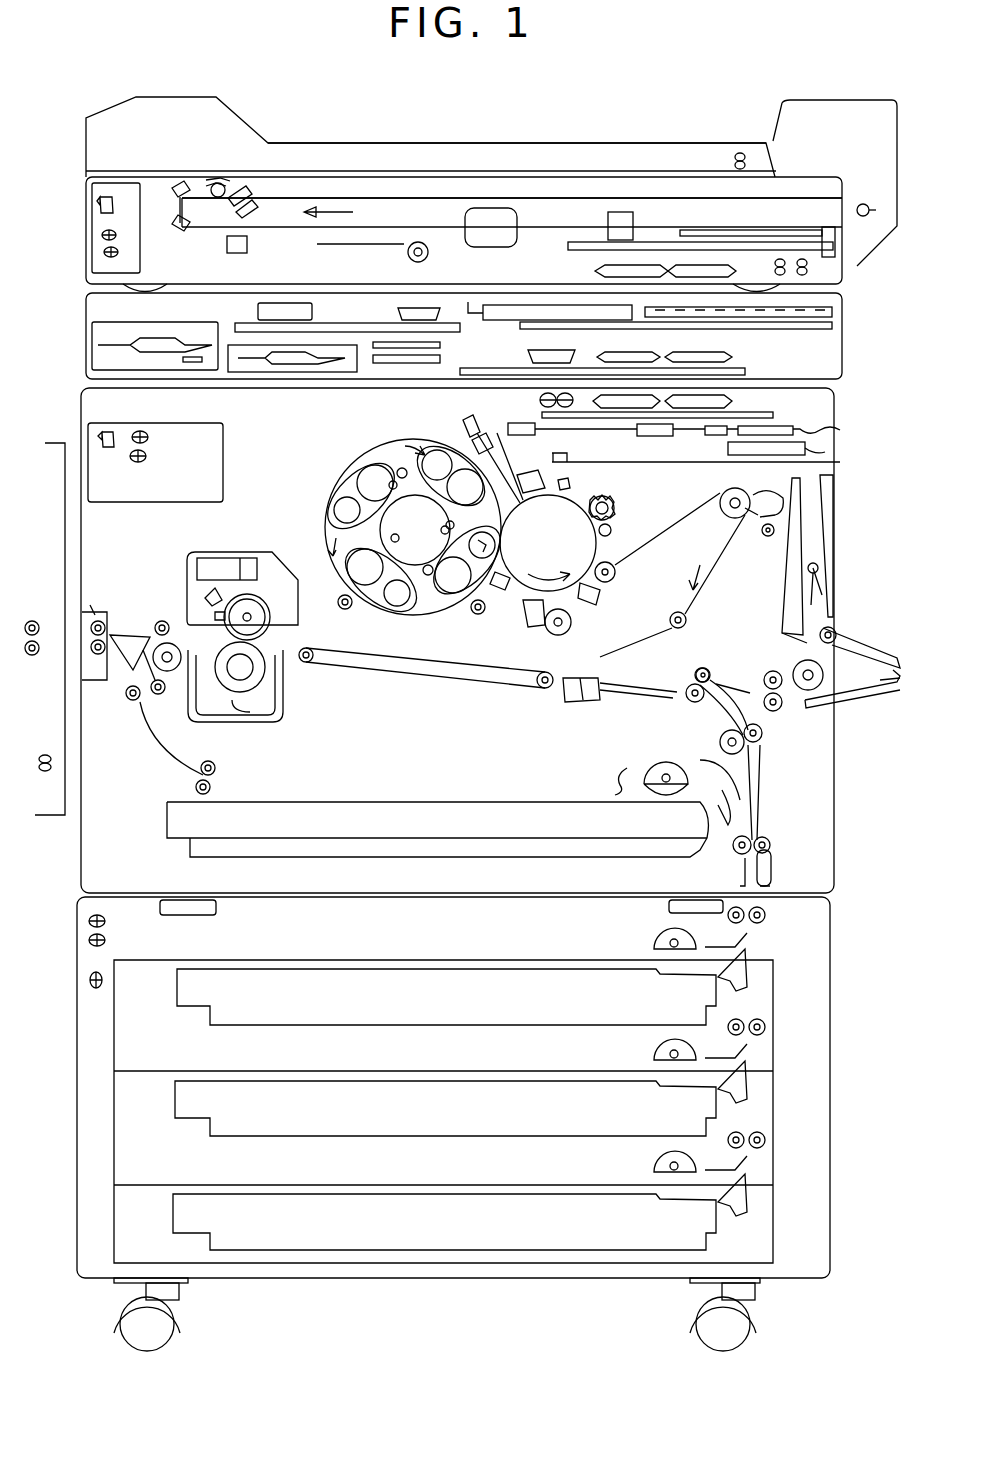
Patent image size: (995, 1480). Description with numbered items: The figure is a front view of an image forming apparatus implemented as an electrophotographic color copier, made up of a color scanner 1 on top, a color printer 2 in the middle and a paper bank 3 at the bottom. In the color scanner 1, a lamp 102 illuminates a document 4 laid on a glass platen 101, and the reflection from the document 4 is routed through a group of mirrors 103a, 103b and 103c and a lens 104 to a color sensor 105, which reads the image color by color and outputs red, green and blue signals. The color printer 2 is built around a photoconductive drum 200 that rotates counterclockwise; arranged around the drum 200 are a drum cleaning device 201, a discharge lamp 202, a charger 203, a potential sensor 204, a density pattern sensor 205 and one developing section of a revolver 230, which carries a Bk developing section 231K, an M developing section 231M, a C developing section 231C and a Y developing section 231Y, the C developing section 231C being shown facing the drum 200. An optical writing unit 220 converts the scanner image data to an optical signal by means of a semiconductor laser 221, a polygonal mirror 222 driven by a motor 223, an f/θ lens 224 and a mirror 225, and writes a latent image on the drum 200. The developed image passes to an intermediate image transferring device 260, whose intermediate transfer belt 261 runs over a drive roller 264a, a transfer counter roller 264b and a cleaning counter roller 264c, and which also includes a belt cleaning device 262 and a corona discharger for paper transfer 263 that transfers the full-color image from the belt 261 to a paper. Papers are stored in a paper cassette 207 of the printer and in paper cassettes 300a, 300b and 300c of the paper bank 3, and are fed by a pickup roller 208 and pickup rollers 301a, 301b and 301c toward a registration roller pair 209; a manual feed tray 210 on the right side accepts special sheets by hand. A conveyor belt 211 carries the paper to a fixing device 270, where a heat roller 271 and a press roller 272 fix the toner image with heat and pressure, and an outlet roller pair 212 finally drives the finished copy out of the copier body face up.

The color scanner 1 is at (877, 273).
The color printer 2 is at (859, 528).
The paper bank 3 is at (486, 1124).
The document 4 is at (420, 160).
The glass platen 101 is at (578, 175).
The lamp 102 is at (262, 175).
The mirror 103a is at (270, 185).
The mirror 103b is at (172, 190).
The mirror 103c is at (176, 232).
The lens 104 is at (493, 205).
The color sensor 105 is at (610, 212).
The photoconductive drum 200 is at (566, 553).
The drum cleaning device 201 is at (615, 506).
The discharge lamp 202 is at (570, 484).
The charger 203 is at (526, 468).
The potential sensor 204 is at (470, 445).
The density pattern sensor 205 is at (522, 612).
The paper cassette 207 is at (452, 858).
The pickup roller 208 is at (640, 780).
The registration roller pair 209 is at (692, 692).
The manual feed tray 210 is at (862, 704).
The conveyor belt 211 is at (398, 670).
The outlet roller pair 212 is at (95, 605).
The optical writing unit 220 is at (811, 420).
The semiconductor laser 221 is at (710, 445).
The polygonal mirror 222 is at (840, 430).
The motor 223 is at (840, 462).
The f/θ lens 224 is at (637, 444).
The mirror 225 is at (464, 422).
The revolver 230 is at (376, 533).
The Bk developing section 231K is at (405, 448).
The Y developing section 231Y is at (328, 520).
The M developing section 231M is at (342, 590).
The C developing section 231C is at (438, 611).
The intermediate image transferring device 260 is at (691, 595).
The intermediate transfer belt 261 is at (742, 535).
The belt cleaning device 262 is at (520, 672).
The corona discharger for paper transfer 263 is at (568, 704).
The drive roller 264a is at (712, 528).
The transfer counter roller 264b is at (603, 668).
The cleaning counter roller 264c is at (668, 622).
The fixing device 270 is at (235, 659).
The heat roller 271 is at (278, 552).
The press roller 272 is at (262, 722).
The paper cassette 300a is at (470, 1026).
The paper cassette 300b is at (468, 1138).
The paper cassette 300c is at (466, 1252).
The pickup roller 301a is at (654, 944).
The pickup roller 301b is at (654, 1056).
The pickup roller 301c is at (654, 1168).